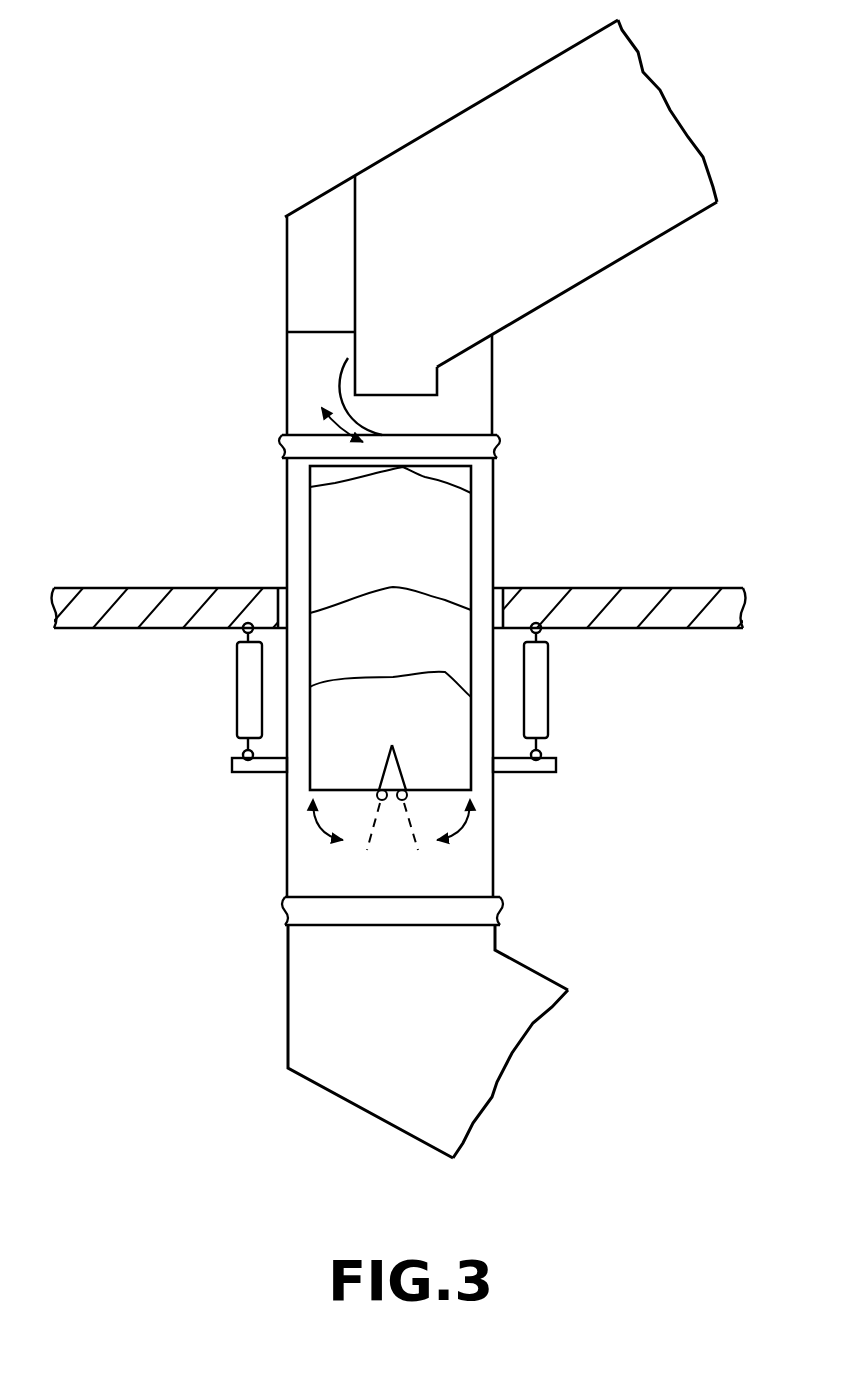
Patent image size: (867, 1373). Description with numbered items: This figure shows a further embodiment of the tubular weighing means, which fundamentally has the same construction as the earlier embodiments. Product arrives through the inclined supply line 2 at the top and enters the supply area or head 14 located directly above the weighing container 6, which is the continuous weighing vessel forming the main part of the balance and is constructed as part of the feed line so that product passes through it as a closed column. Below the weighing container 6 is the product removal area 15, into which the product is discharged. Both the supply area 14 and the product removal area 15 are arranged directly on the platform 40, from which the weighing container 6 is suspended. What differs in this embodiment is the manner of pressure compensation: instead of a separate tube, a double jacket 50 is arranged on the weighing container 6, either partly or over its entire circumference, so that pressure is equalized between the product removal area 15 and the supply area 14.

The supply line 2 is at (587, 245).
The supply area 14 is at (383, 418).
The double jacket 50 is at (500, 550).
The weighing container 6 is at (478, 483).
The platform 40 is at (615, 613).
The product removal area 15 is at (357, 913).